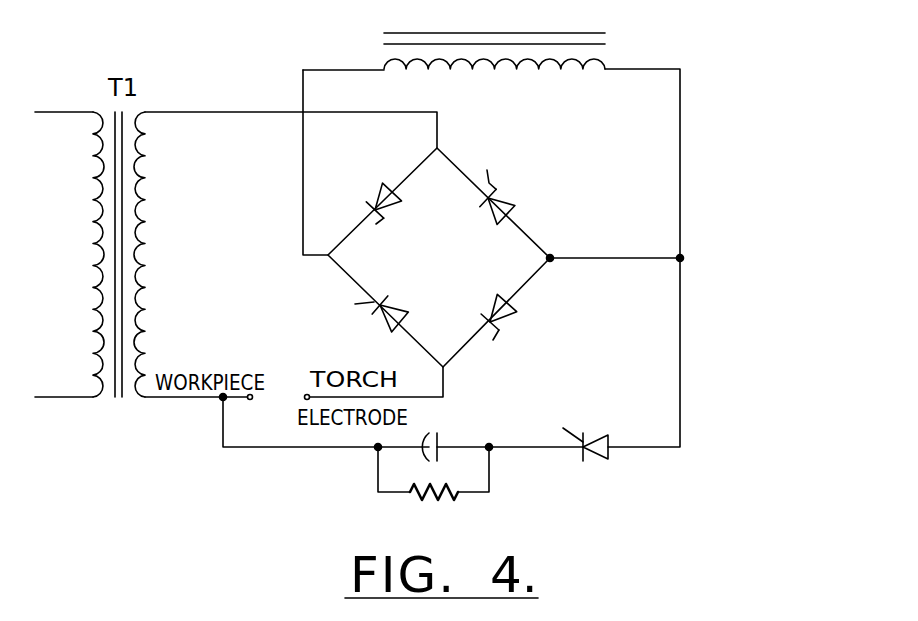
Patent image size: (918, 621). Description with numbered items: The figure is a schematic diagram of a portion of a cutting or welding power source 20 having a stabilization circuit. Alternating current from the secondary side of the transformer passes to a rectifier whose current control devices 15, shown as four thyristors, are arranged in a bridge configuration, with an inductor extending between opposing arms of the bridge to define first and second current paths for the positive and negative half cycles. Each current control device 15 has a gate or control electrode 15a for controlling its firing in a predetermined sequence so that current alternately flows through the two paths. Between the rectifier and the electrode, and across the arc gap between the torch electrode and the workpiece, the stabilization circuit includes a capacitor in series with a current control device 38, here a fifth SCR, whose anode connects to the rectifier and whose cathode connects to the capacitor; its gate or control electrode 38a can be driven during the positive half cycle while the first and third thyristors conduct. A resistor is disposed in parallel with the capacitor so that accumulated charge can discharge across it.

The current control device 15 is at (402, 201).
The gate or control electrode 15a is at (376, 224).
The cutting or welding power source 20 is at (705, 200).
The current control device 38 is at (606, 440).
The gate or control electrode 38a is at (565, 430).